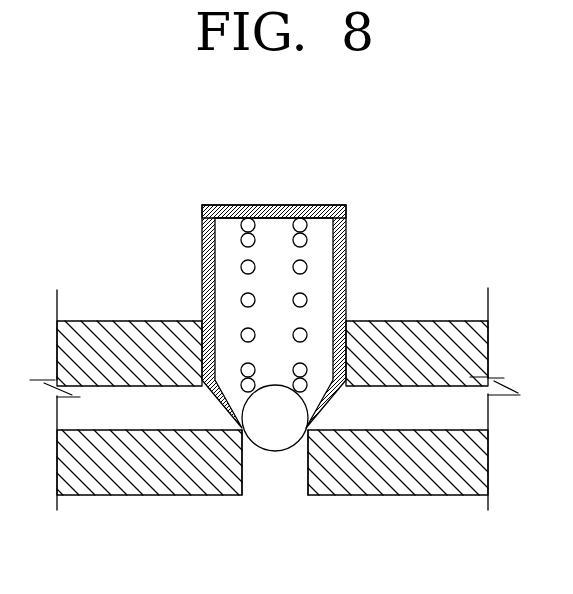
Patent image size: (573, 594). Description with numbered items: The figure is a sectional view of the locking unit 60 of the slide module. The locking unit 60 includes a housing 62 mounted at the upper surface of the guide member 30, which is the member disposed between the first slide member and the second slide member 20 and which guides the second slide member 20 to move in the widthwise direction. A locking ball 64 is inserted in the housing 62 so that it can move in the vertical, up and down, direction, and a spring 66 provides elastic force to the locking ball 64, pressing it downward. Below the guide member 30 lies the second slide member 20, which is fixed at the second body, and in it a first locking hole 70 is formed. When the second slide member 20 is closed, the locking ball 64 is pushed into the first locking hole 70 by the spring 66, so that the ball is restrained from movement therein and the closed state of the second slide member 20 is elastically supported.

The second slide member 20 is at (410, 470).
The guide member 30 is at (435, 333).
The locking unit 60 is at (348, 242).
The housing 62 is at (282, 205).
The locking ball 64 is at (260, 422).
The spring 66 is at (241, 267).
The first locking hole 70 is at (310, 472).